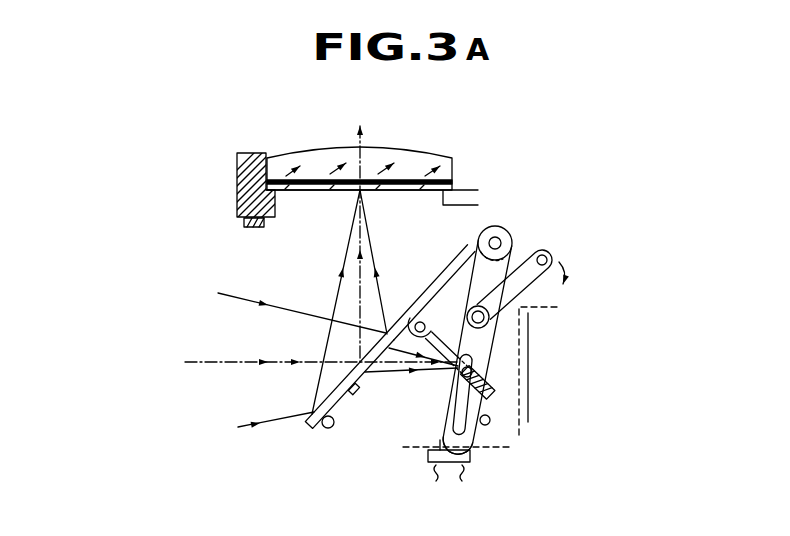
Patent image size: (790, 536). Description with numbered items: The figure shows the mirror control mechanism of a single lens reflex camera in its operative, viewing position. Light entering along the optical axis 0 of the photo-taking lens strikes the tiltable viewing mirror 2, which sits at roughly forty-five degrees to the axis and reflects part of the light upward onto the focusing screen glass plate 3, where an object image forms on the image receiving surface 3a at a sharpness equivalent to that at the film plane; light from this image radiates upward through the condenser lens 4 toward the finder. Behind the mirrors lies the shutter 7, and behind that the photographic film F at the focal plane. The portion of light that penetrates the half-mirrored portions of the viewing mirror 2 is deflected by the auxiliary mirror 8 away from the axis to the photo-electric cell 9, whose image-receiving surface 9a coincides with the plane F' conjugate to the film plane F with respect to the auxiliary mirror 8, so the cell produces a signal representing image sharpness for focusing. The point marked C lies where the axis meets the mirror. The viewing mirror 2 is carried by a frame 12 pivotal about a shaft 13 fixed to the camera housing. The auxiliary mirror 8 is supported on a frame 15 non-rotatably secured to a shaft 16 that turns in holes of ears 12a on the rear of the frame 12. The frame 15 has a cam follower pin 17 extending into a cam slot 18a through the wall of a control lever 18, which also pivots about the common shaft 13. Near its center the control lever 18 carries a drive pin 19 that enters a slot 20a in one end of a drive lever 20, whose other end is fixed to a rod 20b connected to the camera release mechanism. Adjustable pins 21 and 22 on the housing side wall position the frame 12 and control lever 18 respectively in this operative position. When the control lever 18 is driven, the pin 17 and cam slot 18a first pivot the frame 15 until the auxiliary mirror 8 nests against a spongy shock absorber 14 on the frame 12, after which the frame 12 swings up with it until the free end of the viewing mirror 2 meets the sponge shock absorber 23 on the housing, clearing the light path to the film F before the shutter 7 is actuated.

The optical axis 0 is at (215, 362).
The viewing mirror 2 is at (454, 266).
The focusing screen glass plate 3 is at (431, 189).
The image receiving surface 3a is at (383, 194).
The condenser lens 4 is at (437, 160).
The shutter 7 is at (552, 308).
The auxiliary mirror 8 is at (428, 375).
The photo-electric cell 9 is at (464, 459).
The image-receiving surface 9a is at (432, 442).
The frame 12 is at (340, 400).
The ears 12a is at (420, 318).
The shaft 13 is at (498, 239).
The shock absorber 14 is at (359, 391).
The frame 15 is at (529, 396).
The shaft 16 is at (416, 322).
The cam follower pin 17 is at (473, 369).
The control lever 18 is at (506, 266).
The cam slot 18a is at (466, 422).
The drive pin 19 is at (481, 310).
The drive lever 20 is at (548, 268).
The slot 20a is at (490, 330).
The rod 20b is at (546, 257).
The pin 21 is at (327, 428).
The pin 22 is at (490, 420).
The shock absorber 23 is at (258, 229).
The center point C is at (355, 358).
The photographic film F is at (554, 374).
The conjugate plane F' is at (443, 431).